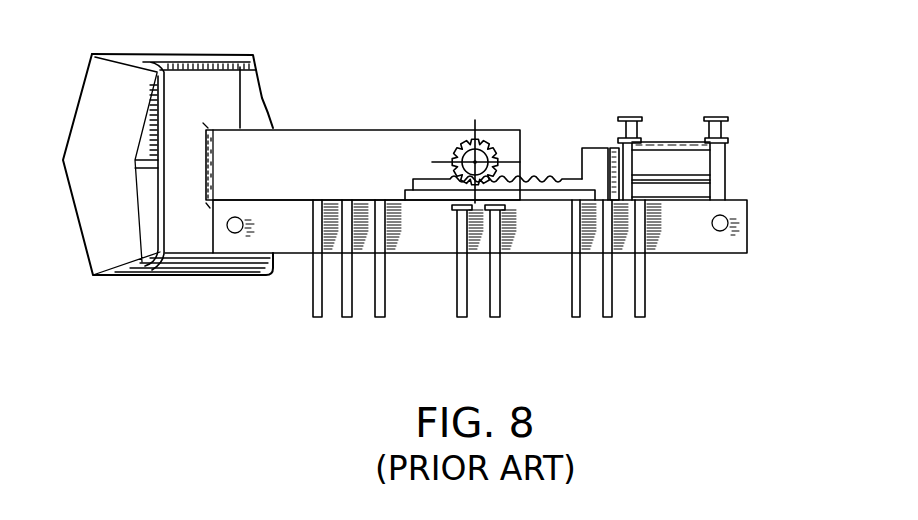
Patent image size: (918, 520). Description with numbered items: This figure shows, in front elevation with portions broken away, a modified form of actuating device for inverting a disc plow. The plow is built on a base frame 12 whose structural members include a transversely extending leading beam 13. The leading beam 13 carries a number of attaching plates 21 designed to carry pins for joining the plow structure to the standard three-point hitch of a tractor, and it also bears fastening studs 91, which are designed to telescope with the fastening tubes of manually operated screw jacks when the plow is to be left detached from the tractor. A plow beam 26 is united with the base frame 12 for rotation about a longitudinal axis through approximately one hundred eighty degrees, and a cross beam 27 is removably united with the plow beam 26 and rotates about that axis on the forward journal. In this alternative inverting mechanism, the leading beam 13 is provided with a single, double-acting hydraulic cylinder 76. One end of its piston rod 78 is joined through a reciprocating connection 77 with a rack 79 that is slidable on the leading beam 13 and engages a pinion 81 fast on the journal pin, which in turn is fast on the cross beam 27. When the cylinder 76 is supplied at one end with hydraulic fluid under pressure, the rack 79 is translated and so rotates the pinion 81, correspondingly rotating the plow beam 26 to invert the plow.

The plow beam 26 is at (245, 52).
The cross beam 27 is at (382, 138).
The pinion 81 is at (475, 138).
The rack 79 is at (540, 177).
The reciprocating connection 77 is at (598, 162).
The piston rod 78 is at (618, 157).
The double-acting hydraulic cylinder 76 is at (672, 150).
The base frame 12 is at (739, 200).
The fastening studs 91 is at (235, 227).
The leading beam 13 is at (685, 235).
The attaching plates 21 is at (377, 320).